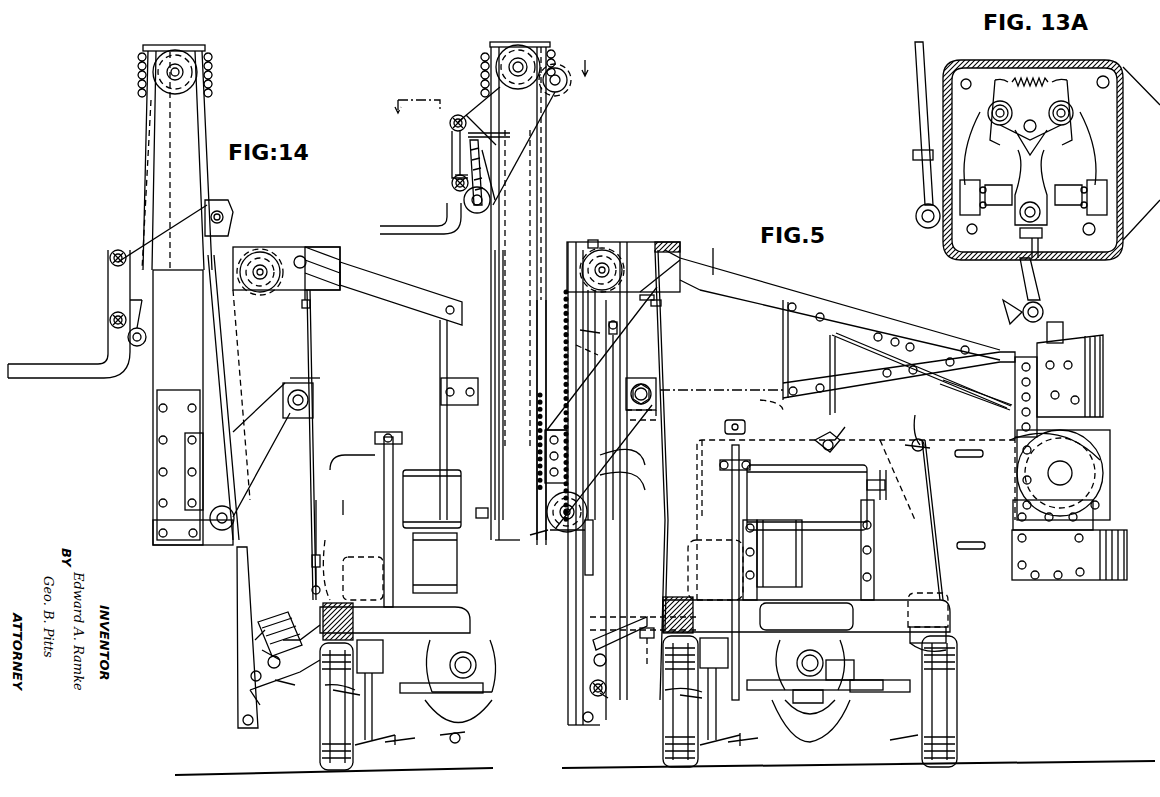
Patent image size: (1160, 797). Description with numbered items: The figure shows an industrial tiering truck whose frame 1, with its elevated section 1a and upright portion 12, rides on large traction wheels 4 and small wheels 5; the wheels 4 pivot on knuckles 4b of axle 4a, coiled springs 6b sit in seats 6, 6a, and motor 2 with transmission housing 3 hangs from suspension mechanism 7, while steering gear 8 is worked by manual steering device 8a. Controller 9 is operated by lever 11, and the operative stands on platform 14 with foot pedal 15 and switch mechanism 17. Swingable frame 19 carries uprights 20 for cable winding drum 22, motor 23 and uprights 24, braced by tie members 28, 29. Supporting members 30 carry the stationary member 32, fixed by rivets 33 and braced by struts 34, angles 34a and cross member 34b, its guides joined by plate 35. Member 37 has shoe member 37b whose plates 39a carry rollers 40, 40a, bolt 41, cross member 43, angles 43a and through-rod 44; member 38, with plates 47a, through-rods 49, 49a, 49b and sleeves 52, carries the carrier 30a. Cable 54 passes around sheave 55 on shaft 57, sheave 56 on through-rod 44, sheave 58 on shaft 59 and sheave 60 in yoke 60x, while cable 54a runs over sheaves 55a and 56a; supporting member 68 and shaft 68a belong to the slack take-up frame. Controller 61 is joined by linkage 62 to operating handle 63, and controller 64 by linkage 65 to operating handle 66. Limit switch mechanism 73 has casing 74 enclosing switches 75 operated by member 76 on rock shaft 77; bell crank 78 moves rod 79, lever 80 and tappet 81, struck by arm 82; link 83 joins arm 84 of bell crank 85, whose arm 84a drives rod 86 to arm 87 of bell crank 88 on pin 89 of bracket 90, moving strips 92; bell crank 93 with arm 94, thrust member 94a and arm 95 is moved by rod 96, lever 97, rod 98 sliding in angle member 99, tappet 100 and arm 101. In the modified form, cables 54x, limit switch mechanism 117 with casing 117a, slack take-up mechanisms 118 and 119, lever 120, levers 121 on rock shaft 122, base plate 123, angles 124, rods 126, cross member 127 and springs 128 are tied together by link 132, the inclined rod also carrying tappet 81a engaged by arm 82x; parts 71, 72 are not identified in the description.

In FIG. 5, the truck chassis frame 1 is at (806, 616).
In FIG. 14, the frame cross member 1a is at (455, 610).
In FIG. 5, the frame cross member 1a is at (950, 605).
In FIG. 14, the wheel housing 2 is at (436, 645).
In FIG. 5, the wheel housing 2 is at (781, 640).
In FIG. 14, the axle housing 3 is at (445, 742).
In FIG. 5, the axle housing 3 is at (824, 738).
In FIG. 14, the wheel 4 is at (322, 757).
In FIG. 5, the wheel 4 is at (664, 753).
In FIG. 5, the axle 4a is at (858, 733).
In FIG. 14, the brake rod 4b is at (372, 742).
In FIG. 5, the brake rod 4b is at (712, 742).
In FIG. 5, the lift rod 5 is at (601, 405).
In FIG. 14, the hub support 6 is at (375, 650).
In FIG. 5, the hub support 6 is at (470, 393).
In FIG. 14, the support arm 6a is at (333, 690).
In FIG. 5, the support arm 6a is at (470, 530).
In FIG. 14, the support link 6b is at (325, 685).
In FIG. 5, the support link 6b is at (665, 690).
In FIG. 14, the differential housing 7 is at (478, 718).
In FIG. 5, the differential housing 7 is at (784, 745).
In FIG. 14, the steering link 8 is at (400, 742).
In FIG. 5, the steering link 8 is at (743, 748).
In FIG. 5, the column cap 8a is at (730, 422).
In FIG. 14, the hydraulic cylinder 9 is at (432, 524).
In FIG. 5, the hydraulic cylinder 9 is at (822, 512).
In FIG. 5, the piston rod 11 is at (880, 492).
In FIG. 14, the upright column 12 is at (397, 452).
In FIG. 5, the upright column 12 is at (750, 445).
In FIG. 14, the axle 14 is at (480, 682).
In FIG. 5, the axle 14 is at (810, 658).
In FIG. 5, the bracket 15 is at (840, 645).
In FIG. 5, the pump housing 17 is at (797, 562).
In FIG. 5, the base plate 19 is at (1069, 551).
In FIG. 5, the counterweight frame 20 is at (1015, 455).
In FIG. 5, the gear housing 22 is at (1097, 433).
In FIG. 5, the motor 23 is at (1098, 387).
In FIG. 5, the frame rail 24 is at (780, 410).
In FIG. 5, the boom tie 28 is at (782, 385).
In FIG. 5, the boom pivot 29 is at (1012, 358).
In FIG. 14, the cross bar 30 is at (352, 550).
In FIG. 5, the cross bar 30 is at (638, 620).
In FIG. 14, the fork arm 30a is at (77, 314).
In FIG. 5, the fork arm 30a is at (420, 218).
In FIG. 14, the mast upright 32 is at (236, 575).
In FIG. 5, the mast upright 32 is at (624, 532).
In FIG. 5, the mast foot 33 is at (583, 730).
In FIG. 5, the boom 34 is at (792, 310).
In FIG. 5, the boom plate 34a is at (660, 244).
In FIG. 5, the boom bracket 34b is at (672, 248).
In FIG. 5, the mast channel 35 is at (568, 248).
In FIG. 14, the fixed mast 37 is at (156, 386).
In FIG. 5, the fixed mast 37 is at (540, 192).
In FIG. 5, the roller chain 37b is at (580, 378).
In FIG. 14, the telescoping mast 38 is at (188, 292).
In FIG. 5, the telescoping mast 38 is at (518, 291).
In FIG. 5, the bracket 39a is at (636, 418).
In FIG. 5, the guide block 40 is at (640, 378).
In FIG. 5, the guide plate 40a is at (566, 538).
In FIG. 5, the pivot bolt 41 is at (652, 388).
In FIG. 5, the plate 43 is at (560, 430).
In FIG. 5, the plate flange 43a is at (562, 410).
In FIG. 5, the lower sheave 44 is at (551, 542).
In FIG. 5, the hoist cable 47a is at (548, 128).
In FIG. 5, the bracket 49 is at (456, 135).
In FIG. 5, the bracket 49a is at (452, 183).
In FIG. 5, the roller 49b is at (476, 214).
In FIG. 5, the pin 52 is at (450, 123).
In FIG. 14, the boom 54 is at (240, 312).
In FIG. 5, the boom chord 54a is at (546, 178).
In FIG. 14, the cable 54x is at (150, 190).
In FIG. 5, the sprocket 55 is at (608, 250).
In FIG. 14, the sprocket 55a is at (245, 295).
In FIG. 5, the bracket 56 is at (584, 550).
In FIG. 14, the sheave 56a is at (232, 515).
In FIG. 5, the chain 57 is at (570, 268).
In FIG. 14, the top sheave 58 is at (180, 92).
In FIG. 5, the top sheave 58 is at (508, 46).
In FIG. 14, the sheave pin 59 is at (185, 75).
In FIG. 5, the sheave pin 59 is at (524, 58).
In FIG. 5, the link 60 is at (494, 143).
In FIG. 5, the link end 60x is at (495, 198).
In FIG. 5, the fender 61 is at (946, 657).
In FIG. 5, the fender bracket 62 is at (945, 637).
In FIG. 5, the lever 63 is at (838, 438).
In FIG. 5, the housing 64 is at (948, 617).
In FIG. 5, the tie rod 65 is at (930, 545).
In FIG. 5, the lever 66 is at (920, 420).
In FIG. 5, the lug 68 is at (593, 240).
In FIG. 5, the lug 68a is at (655, 298).
In FIG. 5, the idler sheave 71 is at (560, 68).
In FIG. 5, the cable 72 is at (480, 97).
In FIG. 5, the rod 73 is at (664, 575).
In FIG. 5, the control box 74 is at (700, 542).
In FIG. 13A, the control box 74 is at (1122, 68).
In FIG. 13A, the roller 75 is at (1033, 151).
In FIG. 13A, the pivot 76 is at (1005, 252).
In FIG. 13A, the stem 77 is at (1013, 256).
In FIG. 5, the control lever 78 is at (692, 575).
In FIG. 13A, the control lever 78 is at (924, 228).
In FIG. 14, the control rod 79 is at (316, 440).
In FIG. 5, the control rod 79 is at (662, 460).
In FIG. 13A, the control rod 79 is at (916, 112).
In FIG. 14, the sheave housing 80 is at (290, 250).
In FIG. 5, the sheave housing 80 is at (630, 250).
In FIG. 14, the rod 81 is at (311, 306).
In FIG. 5, the rod 81 is at (658, 306).
In FIG. 14, the rod fitting 81a is at (313, 560).
In FIG. 14, the brace 82 is at (312, 408).
In FIG. 5, the brace 82 is at (656, 415).
In FIG. 14, the bracket 82x is at (320, 378).
In FIG. 5, the link 83 is at (647, 638).
In FIG. 13A, the link 83 is at (1012, 315).
In FIG. 5, the pin 84 is at (594, 661).
In FIG. 5, the pin 84a is at (607, 694).
In FIG. 5, the pin 85 is at (590, 686).
In FIG. 5, the rod 86 is at (623, 557).
In FIG. 5, the tube 87 is at (616, 340).
In FIG. 5, the fitting 88 is at (619, 325).
In FIG. 5, the line 89 is at (576, 350).
In FIG. 5, the line 90 is at (580, 333).
In FIG. 5, the frame line 92 is at (590, 590).
In FIG. 5, the chain 93 is at (535, 485).
In FIG. 5, the cable 94 is at (600, 480).
In FIG. 5, the cable 94a is at (600, 458).
In FIG. 5, the bracket 95 is at (530, 548).
In FIG. 5, the rail 96 is at (535, 377).
In FIG. 5, the section line 97 is at (560, 62).
In FIG. 5, the rail 98 is at (503, 330).
In FIG. 5, the bracket 99 is at (510, 540).
In FIG. 5, the stop 100 is at (488, 494).
In FIG. 5, the cable 101 is at (470, 115).
In FIG. 14, the rod 117 is at (345, 507).
In FIG. 14, the rod 117a is at (315, 545).
In FIG. 14, the sheave 118 is at (260, 260).
In FIG. 14, the block 119 is at (321, 617).
In FIG. 14, the pin 120 is at (314, 588).
In FIG. 14, the lever 121 is at (255, 688).
In FIG. 14, the link 122 is at (283, 638).
In FIG. 14, the pivot 123 is at (283, 686).
In FIG. 14, the pin 124 is at (260, 672).
In FIG. 14, the spring 126 is at (265, 625).
In FIG. 14, the spring end 127 is at (258, 642).
In FIG. 14, the spring seat 128 is at (262, 652).
In FIG. 14, the cable 132 is at (350, 548).